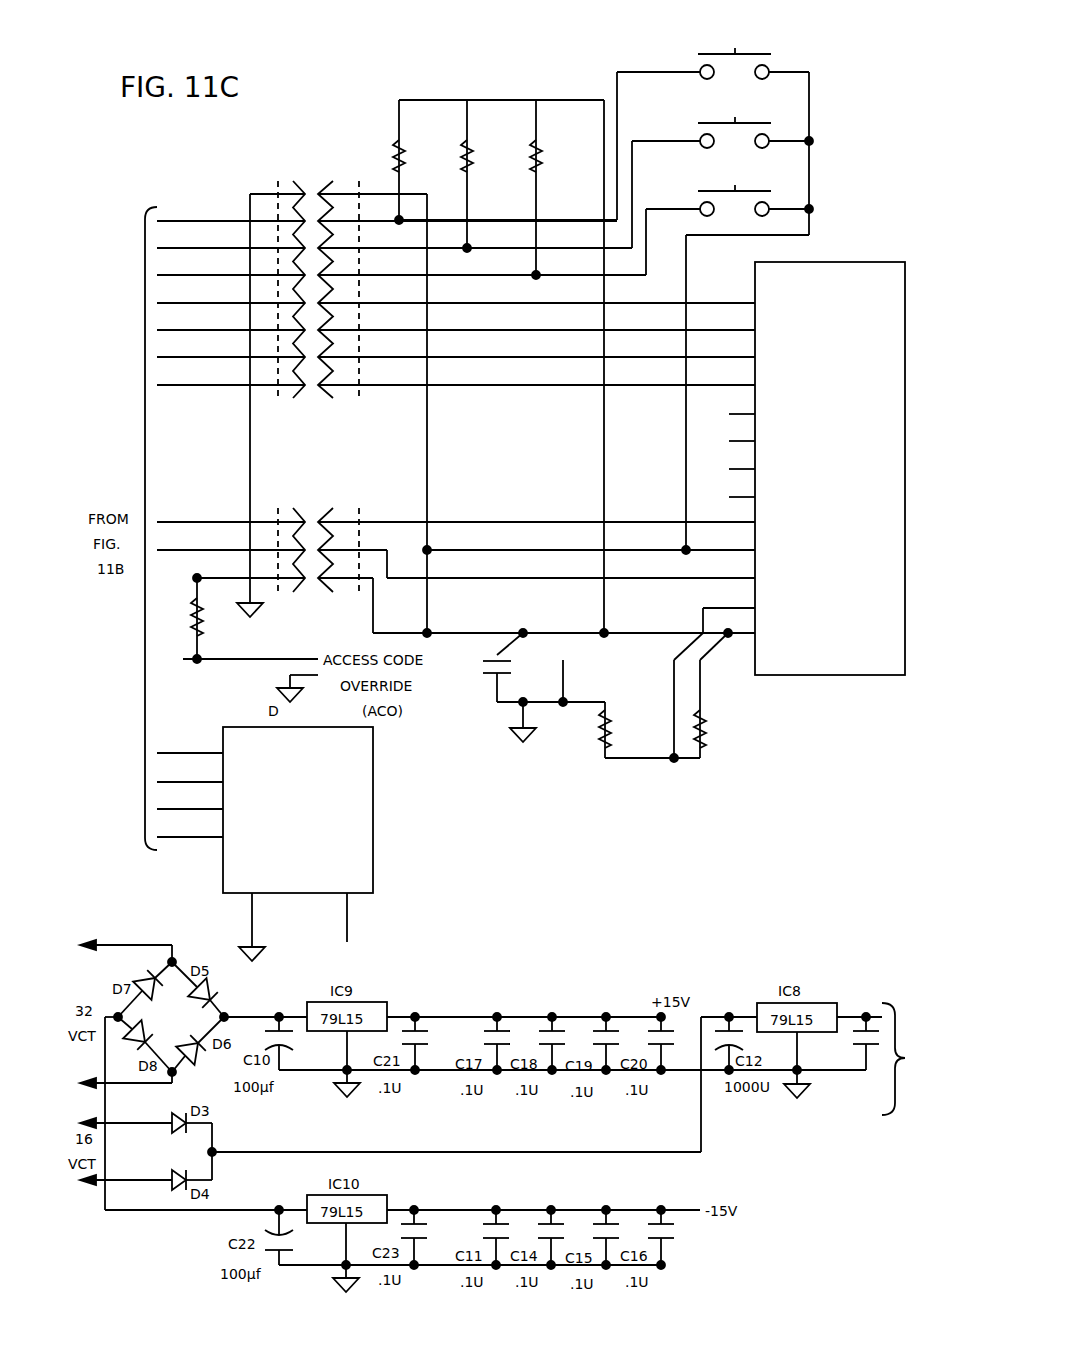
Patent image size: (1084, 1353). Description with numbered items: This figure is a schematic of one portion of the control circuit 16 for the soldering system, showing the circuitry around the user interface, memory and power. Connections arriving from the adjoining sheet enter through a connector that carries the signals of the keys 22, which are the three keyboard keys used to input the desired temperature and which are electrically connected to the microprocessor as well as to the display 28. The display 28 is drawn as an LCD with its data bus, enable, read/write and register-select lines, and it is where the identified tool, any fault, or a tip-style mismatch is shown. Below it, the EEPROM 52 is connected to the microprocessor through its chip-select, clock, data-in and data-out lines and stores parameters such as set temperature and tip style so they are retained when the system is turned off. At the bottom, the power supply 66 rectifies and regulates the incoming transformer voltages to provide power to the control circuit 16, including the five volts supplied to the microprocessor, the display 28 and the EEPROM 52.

The control circuit 16 is at (356, 89).
The keys 22 is at (375, 163).
The display 28 is at (843, 262).
The EEPROM 52 is at (373, 827).
The power supply 66 is at (195, 575).